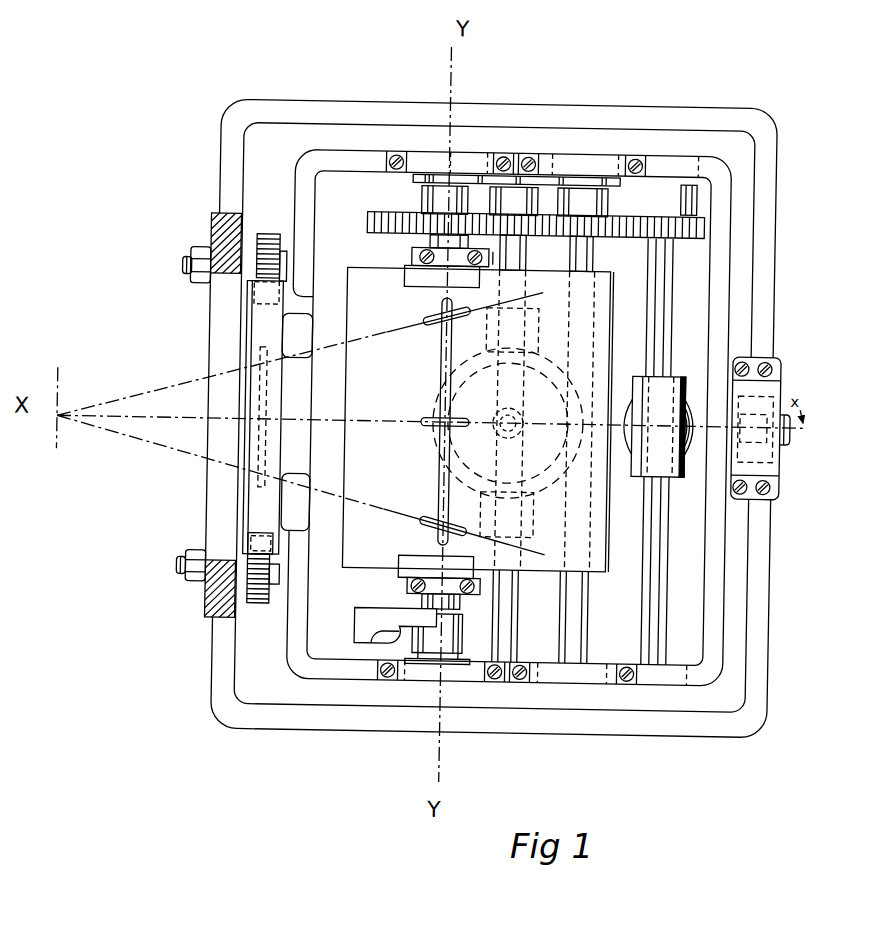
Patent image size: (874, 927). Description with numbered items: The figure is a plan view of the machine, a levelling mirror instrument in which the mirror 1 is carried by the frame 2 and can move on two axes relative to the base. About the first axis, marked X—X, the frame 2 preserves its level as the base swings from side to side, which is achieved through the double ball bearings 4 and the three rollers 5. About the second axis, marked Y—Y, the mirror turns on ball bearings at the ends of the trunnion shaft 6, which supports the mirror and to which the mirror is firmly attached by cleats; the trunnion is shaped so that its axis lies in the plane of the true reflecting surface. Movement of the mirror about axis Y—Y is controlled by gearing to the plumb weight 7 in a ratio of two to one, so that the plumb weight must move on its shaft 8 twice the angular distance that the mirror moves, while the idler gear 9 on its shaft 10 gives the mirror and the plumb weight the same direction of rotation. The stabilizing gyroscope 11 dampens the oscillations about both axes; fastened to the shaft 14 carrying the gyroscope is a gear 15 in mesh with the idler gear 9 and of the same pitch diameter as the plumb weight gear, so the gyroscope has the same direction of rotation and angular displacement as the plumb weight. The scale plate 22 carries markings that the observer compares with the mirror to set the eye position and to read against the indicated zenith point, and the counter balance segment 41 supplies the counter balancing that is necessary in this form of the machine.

The mirror 1 is at (632, 306).
The frame 2 is at (332, 151).
The double ball bearings 4 is at (768, 459).
The rollers 5 is at (264, 235).
The trunnion shaft 6 is at (408, 255).
The plumb weight 7 is at (698, 391).
The shaft 8 is at (695, 537).
The idler gear 9 is at (606, 243).
The shaft 10 is at (633, 610).
The stabilizing gyroscope 11 is at (549, 487).
The shaft 14 is at (551, 609).
The gear 15 is at (538, 197).
The scale plate 22 is at (269, 452).
The counter balance segment 41 is at (369, 609).